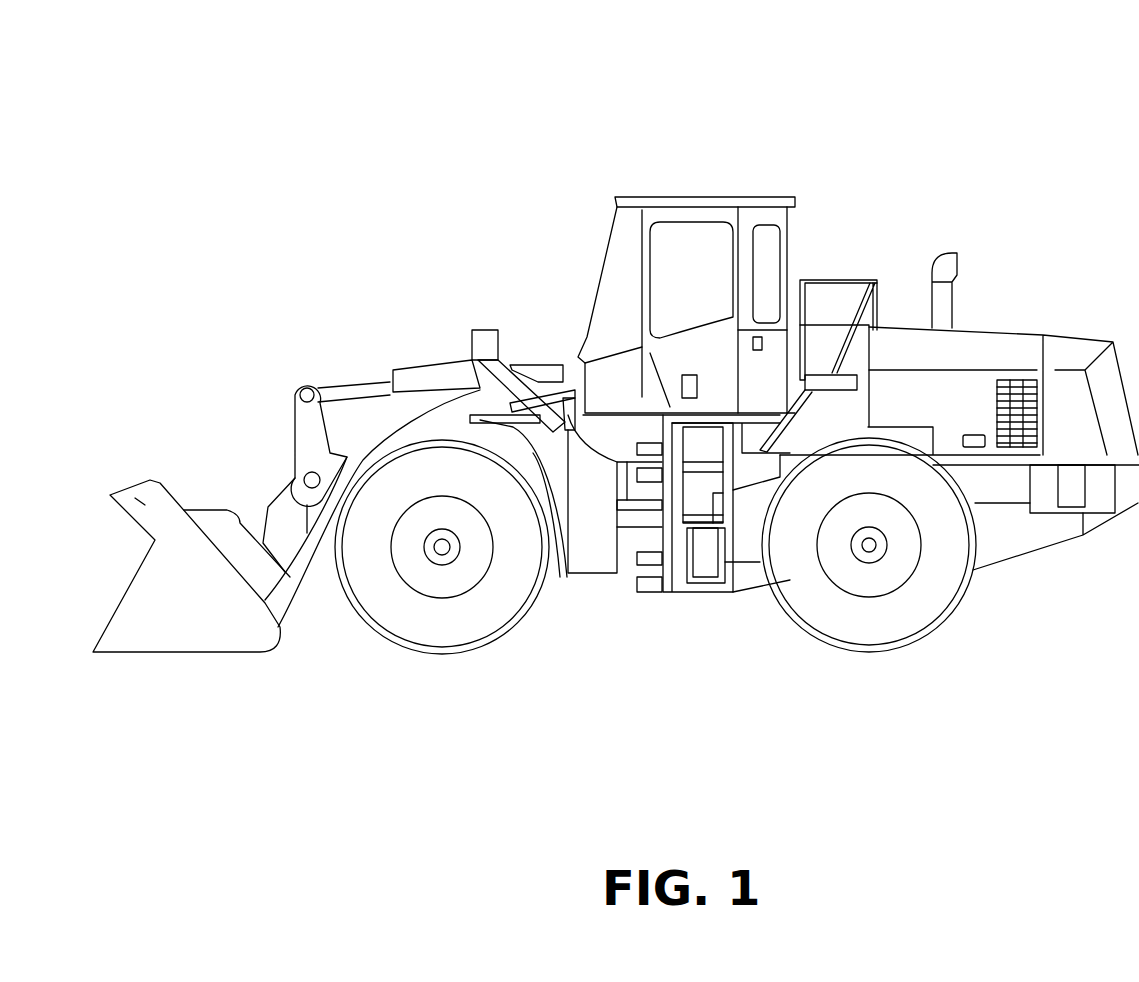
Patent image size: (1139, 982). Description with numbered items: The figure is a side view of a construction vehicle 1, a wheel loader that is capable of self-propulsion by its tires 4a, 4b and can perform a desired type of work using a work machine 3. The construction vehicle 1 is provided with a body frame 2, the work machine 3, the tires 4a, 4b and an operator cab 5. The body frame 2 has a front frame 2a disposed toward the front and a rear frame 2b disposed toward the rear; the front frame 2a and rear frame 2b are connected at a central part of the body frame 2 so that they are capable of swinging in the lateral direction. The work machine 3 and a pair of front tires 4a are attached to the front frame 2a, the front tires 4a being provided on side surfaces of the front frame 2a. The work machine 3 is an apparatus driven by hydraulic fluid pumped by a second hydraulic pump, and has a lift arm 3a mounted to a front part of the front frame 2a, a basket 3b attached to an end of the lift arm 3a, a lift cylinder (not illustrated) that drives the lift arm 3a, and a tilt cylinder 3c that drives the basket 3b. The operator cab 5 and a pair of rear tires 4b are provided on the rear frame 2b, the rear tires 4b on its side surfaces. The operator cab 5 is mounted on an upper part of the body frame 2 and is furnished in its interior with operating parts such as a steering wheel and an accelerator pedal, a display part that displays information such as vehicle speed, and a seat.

The construction vehicle 1 is at (933, 102).
The body frame 2 is at (685, 608).
The front frame 2a is at (595, 552).
The rear frame 2b is at (752, 553).
The work machine 3 is at (333, 313).
The lift arm 3a is at (395, 440).
The basket 3b is at (135, 497).
The tilt cylinder 3c is at (402, 373).
The front tires 4a is at (453, 633).
The rear tires 4b is at (882, 632).
The operator cab 5 is at (718, 183).